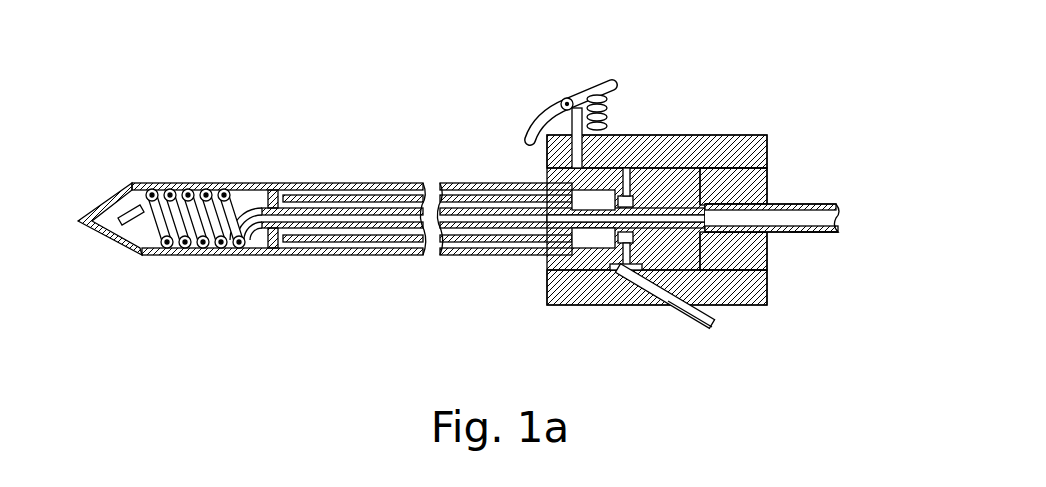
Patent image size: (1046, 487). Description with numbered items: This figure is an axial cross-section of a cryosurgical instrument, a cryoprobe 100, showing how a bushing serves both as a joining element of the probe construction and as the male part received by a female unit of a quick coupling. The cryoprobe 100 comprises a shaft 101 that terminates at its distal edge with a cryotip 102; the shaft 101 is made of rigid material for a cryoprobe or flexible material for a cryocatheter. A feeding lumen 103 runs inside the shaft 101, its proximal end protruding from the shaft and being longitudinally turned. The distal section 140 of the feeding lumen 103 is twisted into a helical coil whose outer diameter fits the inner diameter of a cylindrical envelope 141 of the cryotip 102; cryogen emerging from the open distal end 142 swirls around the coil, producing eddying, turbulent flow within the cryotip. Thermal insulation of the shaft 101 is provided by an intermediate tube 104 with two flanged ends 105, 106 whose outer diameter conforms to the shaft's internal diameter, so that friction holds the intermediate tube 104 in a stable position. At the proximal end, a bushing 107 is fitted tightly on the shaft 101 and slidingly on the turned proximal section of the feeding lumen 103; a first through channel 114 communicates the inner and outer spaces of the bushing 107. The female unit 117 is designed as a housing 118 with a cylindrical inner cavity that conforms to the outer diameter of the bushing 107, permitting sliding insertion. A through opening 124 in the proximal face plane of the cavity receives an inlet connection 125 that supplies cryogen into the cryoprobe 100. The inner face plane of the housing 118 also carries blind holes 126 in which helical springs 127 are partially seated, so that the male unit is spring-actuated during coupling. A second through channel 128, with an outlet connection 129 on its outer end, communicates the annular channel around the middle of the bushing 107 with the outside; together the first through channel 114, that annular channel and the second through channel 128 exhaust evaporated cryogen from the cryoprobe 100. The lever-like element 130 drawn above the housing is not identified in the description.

The cryoprobe 100 is at (384, 200).
The shaft 101 is at (408, 183).
The cryotip 102 is at (178, 274).
The feeding lumen 103 is at (358, 252).
The intermediate tube 104 is at (535, 248).
The flanged end 105 is at (297, 183).
The flanged end 106 is at (548, 258).
The bushing 107 is at (717, 303).
The first through channel 114 is at (657, 134).
The female unit 117 is at (704, 101).
The housing 118 is at (585, 307).
The through opening 124 is at (770, 200).
The inlet connection 125 is at (813, 233).
The blind holes 126 is at (768, 182).
The helical springs 127 is at (768, 153).
The second through channel 128 is at (640, 305).
The outlet connection 129 is at (680, 318).
The lever 130 is at (533, 112).
The distal section 140 is at (219, 183).
The cylindrical envelope 141 is at (167, 183).
The distal end 142 is at (112, 228).